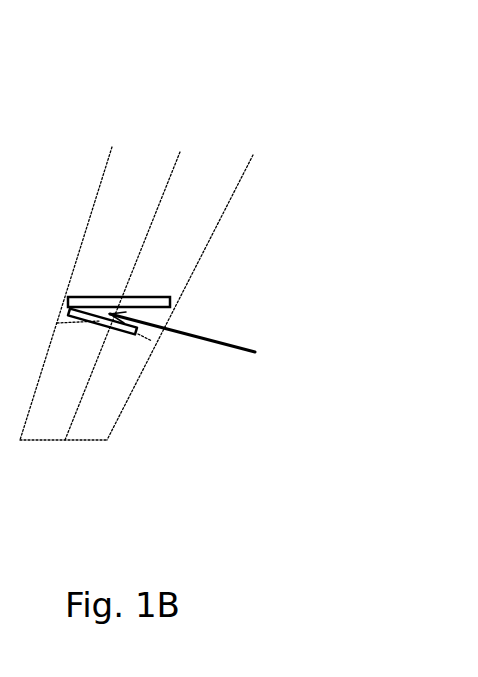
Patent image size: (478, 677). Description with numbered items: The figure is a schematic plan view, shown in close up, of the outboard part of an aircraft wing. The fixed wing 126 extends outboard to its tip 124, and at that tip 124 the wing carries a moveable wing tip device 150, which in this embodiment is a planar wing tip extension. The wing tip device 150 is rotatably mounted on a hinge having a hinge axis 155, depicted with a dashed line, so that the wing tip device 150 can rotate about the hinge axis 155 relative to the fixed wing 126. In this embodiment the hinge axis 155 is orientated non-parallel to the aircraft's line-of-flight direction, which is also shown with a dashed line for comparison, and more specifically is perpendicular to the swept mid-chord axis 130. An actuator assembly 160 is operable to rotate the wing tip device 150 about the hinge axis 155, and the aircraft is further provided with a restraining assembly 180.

The tip 124 is at (198, 345).
The fixed wing 126 is at (188, 213).
The swept mid-chord axis 130 is at (172, 187).
The wing tip device 150 is at (88, 428).
The hinge axis 155 is at (147, 337).
The actuator assembly 160 is at (173, 305).
The restraining assembly 180 is at (210, 342).